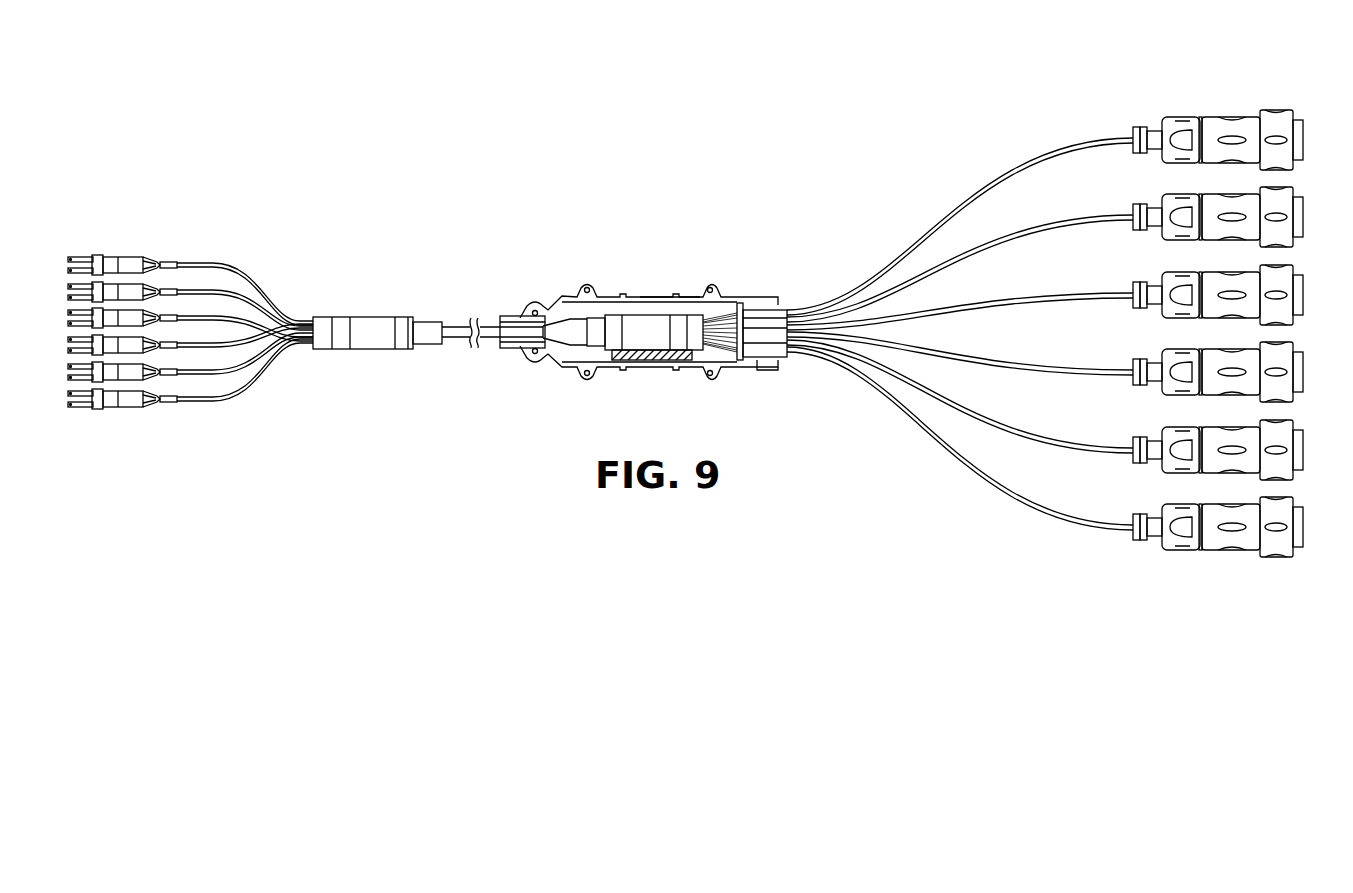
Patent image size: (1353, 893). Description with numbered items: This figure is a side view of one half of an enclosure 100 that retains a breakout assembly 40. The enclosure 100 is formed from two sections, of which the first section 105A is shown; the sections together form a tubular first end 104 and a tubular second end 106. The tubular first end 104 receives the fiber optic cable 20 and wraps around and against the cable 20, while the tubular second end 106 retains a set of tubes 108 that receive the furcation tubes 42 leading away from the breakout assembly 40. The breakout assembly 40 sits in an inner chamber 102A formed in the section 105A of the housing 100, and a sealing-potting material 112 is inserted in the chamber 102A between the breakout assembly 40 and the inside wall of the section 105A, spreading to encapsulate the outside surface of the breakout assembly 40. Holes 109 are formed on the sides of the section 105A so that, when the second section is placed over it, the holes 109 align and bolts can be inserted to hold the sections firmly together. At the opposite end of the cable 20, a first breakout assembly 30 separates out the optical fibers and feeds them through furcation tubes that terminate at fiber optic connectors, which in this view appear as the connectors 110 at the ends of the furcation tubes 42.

The fiber optic cable 20 is at (457, 327).
The first breakout assembly 30 is at (373, 317).
The breakout assembly 40 is at (637, 312).
The furcation tubes 42 is at (1014, 156).
The enclosure 100 is at (598, 252).
The inner chamber 102A is at (563, 308).
The tubular first end 104 is at (498, 350).
The first section 105A is at (665, 297).
The tubular second end 106 is at (783, 306).
The tubes 108 is at (760, 359).
The holes 109 is at (710, 286).
The hardened connectors 110 is at (1229, 110).
The sealing-potting material 112 is at (655, 360).